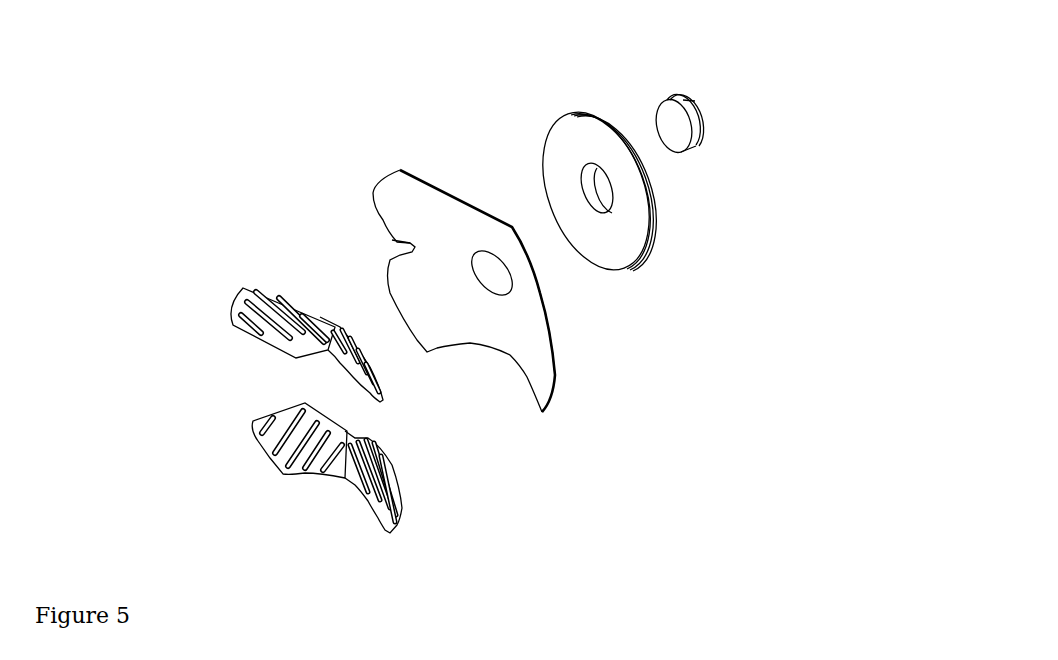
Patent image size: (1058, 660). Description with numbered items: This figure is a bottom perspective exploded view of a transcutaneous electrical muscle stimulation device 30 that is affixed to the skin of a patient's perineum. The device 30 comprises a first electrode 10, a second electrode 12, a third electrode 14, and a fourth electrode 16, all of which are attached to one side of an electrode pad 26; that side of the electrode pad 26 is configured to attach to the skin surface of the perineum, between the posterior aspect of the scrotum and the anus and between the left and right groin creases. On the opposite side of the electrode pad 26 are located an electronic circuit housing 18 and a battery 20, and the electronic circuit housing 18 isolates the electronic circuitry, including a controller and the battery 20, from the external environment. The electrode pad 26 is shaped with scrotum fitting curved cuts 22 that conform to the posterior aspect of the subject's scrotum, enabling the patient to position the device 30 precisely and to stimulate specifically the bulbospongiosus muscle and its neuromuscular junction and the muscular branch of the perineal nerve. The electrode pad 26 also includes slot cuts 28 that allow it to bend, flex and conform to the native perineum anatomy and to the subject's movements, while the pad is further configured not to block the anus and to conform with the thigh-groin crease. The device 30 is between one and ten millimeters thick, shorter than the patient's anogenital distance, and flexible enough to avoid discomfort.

The first electrode 10 is at (245, 288).
The second electrode 12 is at (253, 418).
The third electrode 14 is at (384, 398).
The fourth electrode 16 is at (400, 500).
The electronic circuit housing 18 is at (615, 245).
The battery 20 is at (690, 118).
The scrotum fitting curved cuts 22 is at (445, 188).
The electrode pad 26 is at (513, 320).
The slot cuts 28 is at (402, 243).
The transcutaneous electrical muscle stimulation device 30 is at (280, 167).